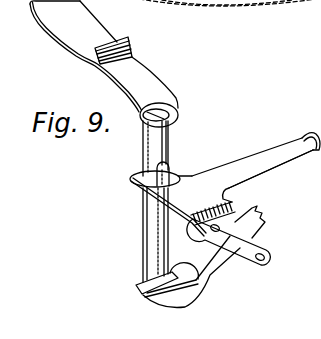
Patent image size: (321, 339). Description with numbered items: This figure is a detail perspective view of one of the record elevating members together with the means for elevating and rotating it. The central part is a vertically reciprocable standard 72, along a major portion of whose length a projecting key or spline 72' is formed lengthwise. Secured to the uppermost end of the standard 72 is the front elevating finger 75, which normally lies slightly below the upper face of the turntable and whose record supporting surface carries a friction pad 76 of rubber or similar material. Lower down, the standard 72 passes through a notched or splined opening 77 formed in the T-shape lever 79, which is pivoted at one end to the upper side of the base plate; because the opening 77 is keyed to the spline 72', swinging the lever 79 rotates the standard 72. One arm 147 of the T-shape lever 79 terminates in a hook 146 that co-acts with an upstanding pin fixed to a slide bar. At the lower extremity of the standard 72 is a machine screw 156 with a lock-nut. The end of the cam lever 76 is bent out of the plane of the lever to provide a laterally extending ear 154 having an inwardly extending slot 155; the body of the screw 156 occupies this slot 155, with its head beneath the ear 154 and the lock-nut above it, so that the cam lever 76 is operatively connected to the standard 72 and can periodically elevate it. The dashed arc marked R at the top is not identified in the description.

The reference arc R is at (221, 4).
The front elevating finger 75 is at (107, 70).
The cam lever 76 is at (100, 36).
The vertically reciprocable standard 72 is at (174, 142).
The key or spline 72' is at (139, 235).
The notched or splined opening 77 is at (131, 183).
The T-shape lever 79 is at (192, 176).
The hook 146 is at (310, 134).
The arm 147 is at (269, 170).
The laterally extending ear 154 is at (180, 266).
The slot 155 is at (198, 294).
The machine screw 156 is at (147, 292).